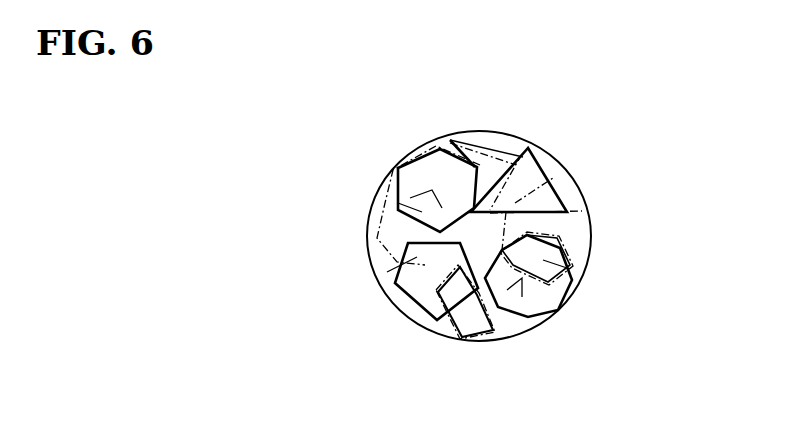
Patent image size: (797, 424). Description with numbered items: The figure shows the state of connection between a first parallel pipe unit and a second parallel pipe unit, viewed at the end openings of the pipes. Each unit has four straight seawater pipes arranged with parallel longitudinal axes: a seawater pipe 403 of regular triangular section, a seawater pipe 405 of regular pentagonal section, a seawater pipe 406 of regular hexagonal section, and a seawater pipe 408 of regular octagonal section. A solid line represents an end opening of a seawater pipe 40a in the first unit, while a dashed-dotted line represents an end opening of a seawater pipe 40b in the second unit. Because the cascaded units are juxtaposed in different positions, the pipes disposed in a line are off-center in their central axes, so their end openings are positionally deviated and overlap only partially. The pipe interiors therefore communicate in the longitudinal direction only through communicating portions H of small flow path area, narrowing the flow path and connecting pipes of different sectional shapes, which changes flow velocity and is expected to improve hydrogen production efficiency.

The seawater pipe in the first parallel pipe unit 40a is at (544, 227).
The seawater pipe in the second parallel pipe unit 40b is at (502, 233).
The seawater pipe having a regular triangle sectional shape 403 is at (489, 150).
The seawater pipe having a regular pentagon sectional shape 405 is at (405, 308).
The seawater pipe having a regular hexagon sectional shape 406 is at (398, 168).
The seawater pipe having a regular octagon sectional shape 408 is at (590, 219).
The communicating portions H is at (476, 167).